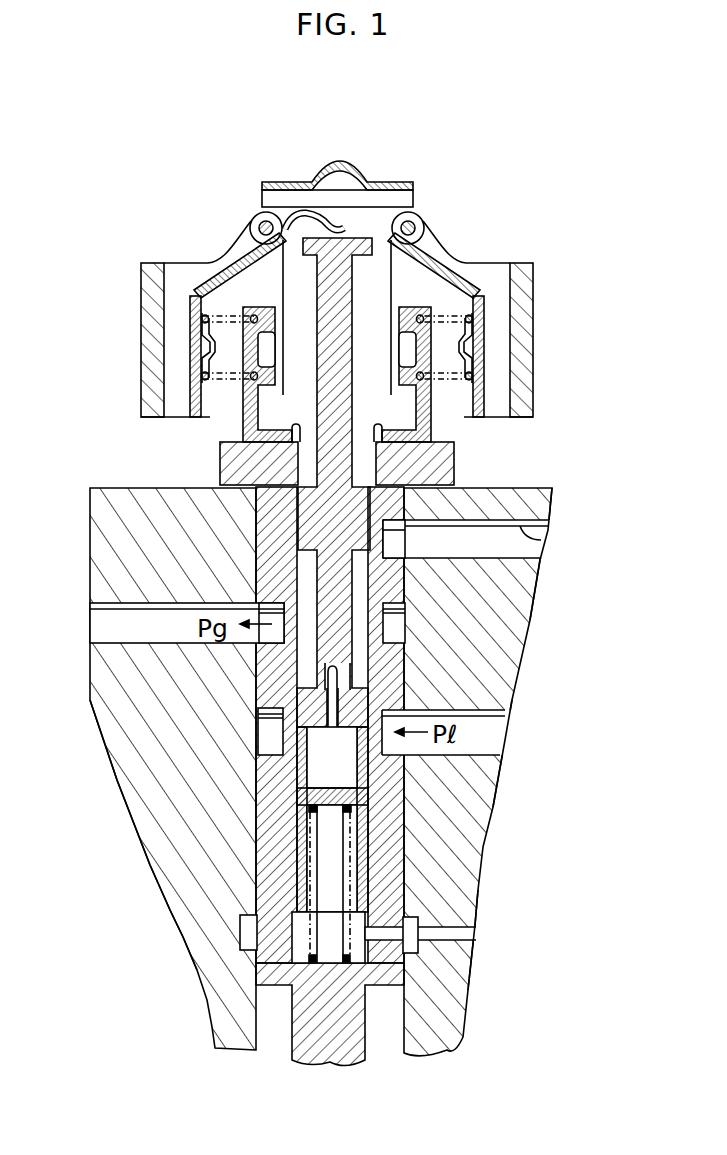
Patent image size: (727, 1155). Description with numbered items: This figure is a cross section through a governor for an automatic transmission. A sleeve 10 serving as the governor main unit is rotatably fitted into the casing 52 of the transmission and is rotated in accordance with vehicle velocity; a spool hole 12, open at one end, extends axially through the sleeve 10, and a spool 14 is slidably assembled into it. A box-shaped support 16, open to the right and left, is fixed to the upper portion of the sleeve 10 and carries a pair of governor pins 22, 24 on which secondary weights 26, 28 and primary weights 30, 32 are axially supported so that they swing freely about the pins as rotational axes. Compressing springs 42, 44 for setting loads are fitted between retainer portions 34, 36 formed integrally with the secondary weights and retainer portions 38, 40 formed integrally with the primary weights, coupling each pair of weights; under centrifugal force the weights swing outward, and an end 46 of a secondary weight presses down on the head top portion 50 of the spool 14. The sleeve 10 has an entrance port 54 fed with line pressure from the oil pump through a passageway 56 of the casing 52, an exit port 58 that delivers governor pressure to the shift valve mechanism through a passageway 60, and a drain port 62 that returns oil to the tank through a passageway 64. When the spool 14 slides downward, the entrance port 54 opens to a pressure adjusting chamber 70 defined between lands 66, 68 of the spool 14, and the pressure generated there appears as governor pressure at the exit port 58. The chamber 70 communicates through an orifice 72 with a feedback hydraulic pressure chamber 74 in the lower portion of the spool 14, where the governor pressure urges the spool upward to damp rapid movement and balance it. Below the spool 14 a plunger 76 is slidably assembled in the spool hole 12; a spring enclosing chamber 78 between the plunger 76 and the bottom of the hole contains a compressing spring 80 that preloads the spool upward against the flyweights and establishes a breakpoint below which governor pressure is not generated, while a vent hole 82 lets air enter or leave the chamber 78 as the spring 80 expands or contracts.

The sleeve 10 is at (400, 965).
The spool hole 12 is at (253, 697).
The spool 14 is at (307, 507).
The support 16 is at (258, 412).
The governor pin 22 is at (262, 222).
The governor pin 24 is at (410, 222).
The secondary weight 26 is at (230, 268).
The secondary weight 28 is at (448, 266).
The primary weight 30 is at (140, 372).
The primary weight 32 is at (588, 396).
The retainer portion 34 is at (213, 345).
The retainer portion 36 is at (458, 345).
The retainer portion 38 is at (232, 350).
The retainer portion 40 is at (430, 388).
The compressing spring 42 is at (193, 394).
The compressing spring 44 is at (480, 392).
The end of secondary weight 46 is at (303, 216).
The head top portion 50 is at (303, 247).
The casing 52 is at (150, 842).
The entrance port 54 is at (347, 780).
The passageway 56 is at (485, 727).
The exit port 58 is at (283, 630).
The passageway 60 is at (100, 625).
The drain port 62 is at (395, 542).
The passageway 64 is at (530, 535).
The land 66 is at (358, 480).
The land 68 is at (257, 787).
The pressure adjusting chamber 70 is at (303, 577).
The orifice 72 is at (343, 680).
The feedback hydraulic pressure chamber 74 is at (367, 827).
The plunger 76 is at (333, 857).
The spring enclosing chamber 78 is at (380, 860).
The compressing spring 80 is at (360, 892).
The vent hole 82 is at (420, 935).